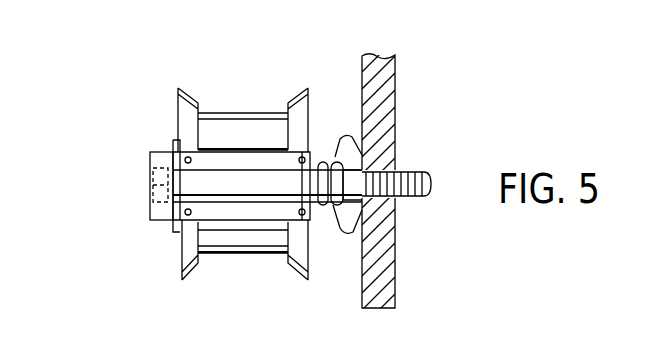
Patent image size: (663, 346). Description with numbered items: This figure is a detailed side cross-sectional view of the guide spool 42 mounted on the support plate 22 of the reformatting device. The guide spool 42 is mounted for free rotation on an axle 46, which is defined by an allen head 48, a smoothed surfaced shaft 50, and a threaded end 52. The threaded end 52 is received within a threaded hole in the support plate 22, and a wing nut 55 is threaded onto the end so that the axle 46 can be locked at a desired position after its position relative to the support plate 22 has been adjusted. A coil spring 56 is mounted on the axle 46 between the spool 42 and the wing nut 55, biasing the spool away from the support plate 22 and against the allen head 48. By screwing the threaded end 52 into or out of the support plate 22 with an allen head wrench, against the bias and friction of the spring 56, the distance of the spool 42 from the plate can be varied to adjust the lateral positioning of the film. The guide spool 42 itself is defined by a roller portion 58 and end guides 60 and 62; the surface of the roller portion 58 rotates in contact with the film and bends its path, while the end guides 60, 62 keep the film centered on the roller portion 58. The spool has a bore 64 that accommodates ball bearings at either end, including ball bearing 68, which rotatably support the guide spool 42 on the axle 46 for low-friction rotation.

The support plate 22 is at (382, 288).
The guide spool 42 is at (303, 112).
The axle 46 is at (150, 162).
The allen head 48 is at (150, 208).
The smoothed surfaced shaft 50 is at (238, 188).
The threaded end 52 is at (402, 172).
The wing nut 55 is at (376, 231).
The coil spring 56 is at (343, 232).
The roller portion 58 is at (242, 113).
The end guide 60 is at (187, 113).
The end guide 62 is at (297, 102).
The bore 64 is at (273, 230).
The ball bearing 68 is at (185, 218).